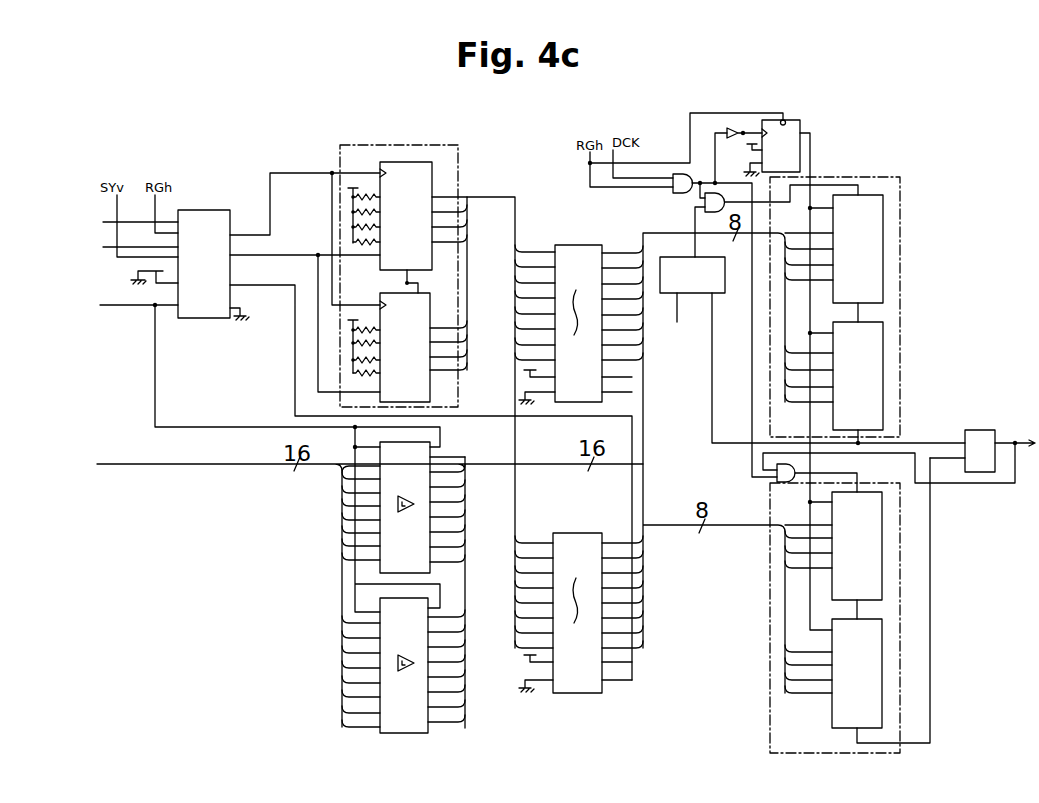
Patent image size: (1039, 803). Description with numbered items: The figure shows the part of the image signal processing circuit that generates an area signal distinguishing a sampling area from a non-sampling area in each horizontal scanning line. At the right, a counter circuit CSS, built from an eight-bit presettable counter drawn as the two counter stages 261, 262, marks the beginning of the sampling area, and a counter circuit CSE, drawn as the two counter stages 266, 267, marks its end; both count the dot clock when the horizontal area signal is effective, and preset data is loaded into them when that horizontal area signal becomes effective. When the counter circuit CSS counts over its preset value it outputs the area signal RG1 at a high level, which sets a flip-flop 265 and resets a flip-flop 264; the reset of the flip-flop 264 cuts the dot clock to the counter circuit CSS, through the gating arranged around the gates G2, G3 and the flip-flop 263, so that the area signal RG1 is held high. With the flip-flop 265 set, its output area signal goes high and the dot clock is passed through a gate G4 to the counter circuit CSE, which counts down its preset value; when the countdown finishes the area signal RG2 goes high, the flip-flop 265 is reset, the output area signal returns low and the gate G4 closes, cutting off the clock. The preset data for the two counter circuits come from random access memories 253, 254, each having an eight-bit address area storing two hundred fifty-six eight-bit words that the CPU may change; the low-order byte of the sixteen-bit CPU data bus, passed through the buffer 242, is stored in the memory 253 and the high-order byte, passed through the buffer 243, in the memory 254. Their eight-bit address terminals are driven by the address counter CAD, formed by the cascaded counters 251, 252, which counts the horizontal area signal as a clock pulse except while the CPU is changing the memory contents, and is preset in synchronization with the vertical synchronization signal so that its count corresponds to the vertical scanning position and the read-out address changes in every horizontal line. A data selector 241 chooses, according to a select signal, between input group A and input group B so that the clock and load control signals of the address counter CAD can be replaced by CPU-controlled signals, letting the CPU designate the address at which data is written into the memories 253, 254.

The data selector 241 is at (212, 210).
The tri-state buffer (low byte) 242 is at (386, 567).
The tri-state buffer (high byte) 243 is at (430, 733).
The address counter (low nibbles) 251 is at (372, 162).
The address counter (high nibbles) 252 is at (340, 303).
The random access memory 253 is at (572, 245).
The random access memory 254 is at (575, 533).
The down counter 261 is at (883, 213).
The down counter 262 is at (883, 341).
The JK flip-flop 263 is at (802, 125).
The flip-flop 264 is at (713, 305).
The flip-flop 265 is at (983, 430).
The down counter 266 is at (883, 515).
The down counter 267 is at (883, 720).
The AND gate G2 is at (681, 193).
The AND gate G3 is at (706, 190).
The gate G4 is at (778, 482).
The address counter CAD is at (458, 162).
The counter circuit CSS is at (900, 285).
The counter circuit CSE is at (900, 652).
The area signal RG1 is at (921, 442).
The area signal RG2 is at (930, 563).